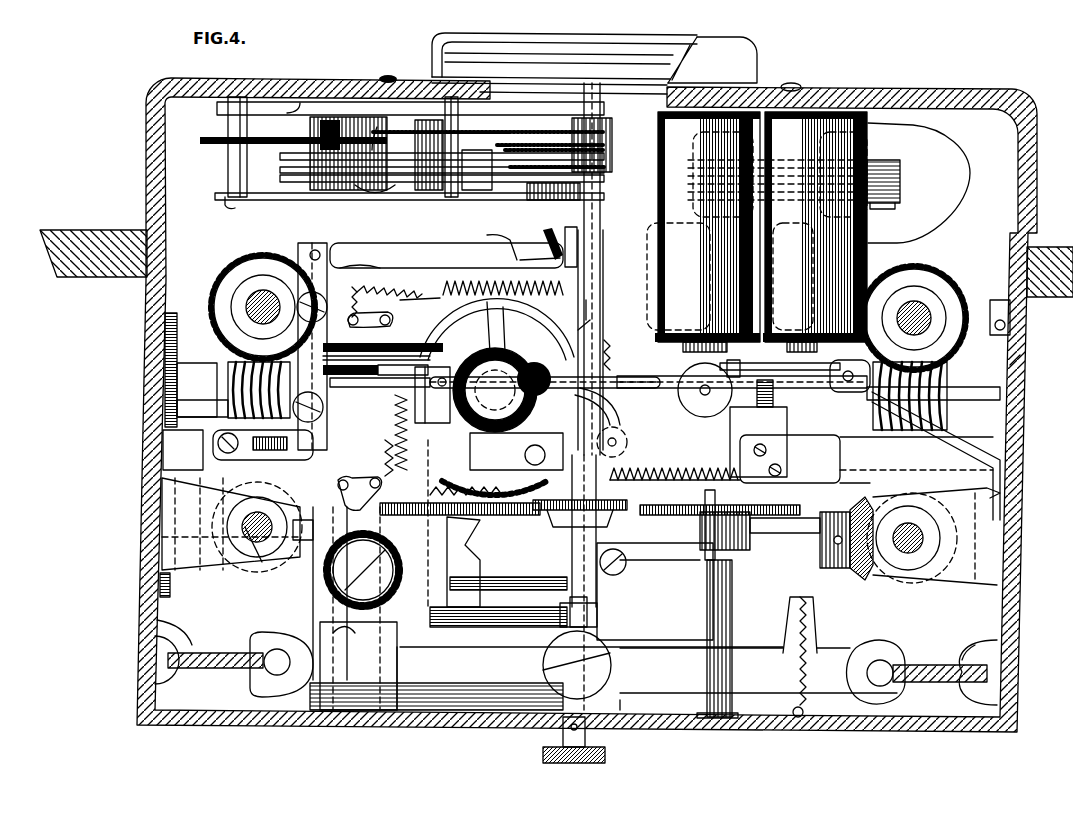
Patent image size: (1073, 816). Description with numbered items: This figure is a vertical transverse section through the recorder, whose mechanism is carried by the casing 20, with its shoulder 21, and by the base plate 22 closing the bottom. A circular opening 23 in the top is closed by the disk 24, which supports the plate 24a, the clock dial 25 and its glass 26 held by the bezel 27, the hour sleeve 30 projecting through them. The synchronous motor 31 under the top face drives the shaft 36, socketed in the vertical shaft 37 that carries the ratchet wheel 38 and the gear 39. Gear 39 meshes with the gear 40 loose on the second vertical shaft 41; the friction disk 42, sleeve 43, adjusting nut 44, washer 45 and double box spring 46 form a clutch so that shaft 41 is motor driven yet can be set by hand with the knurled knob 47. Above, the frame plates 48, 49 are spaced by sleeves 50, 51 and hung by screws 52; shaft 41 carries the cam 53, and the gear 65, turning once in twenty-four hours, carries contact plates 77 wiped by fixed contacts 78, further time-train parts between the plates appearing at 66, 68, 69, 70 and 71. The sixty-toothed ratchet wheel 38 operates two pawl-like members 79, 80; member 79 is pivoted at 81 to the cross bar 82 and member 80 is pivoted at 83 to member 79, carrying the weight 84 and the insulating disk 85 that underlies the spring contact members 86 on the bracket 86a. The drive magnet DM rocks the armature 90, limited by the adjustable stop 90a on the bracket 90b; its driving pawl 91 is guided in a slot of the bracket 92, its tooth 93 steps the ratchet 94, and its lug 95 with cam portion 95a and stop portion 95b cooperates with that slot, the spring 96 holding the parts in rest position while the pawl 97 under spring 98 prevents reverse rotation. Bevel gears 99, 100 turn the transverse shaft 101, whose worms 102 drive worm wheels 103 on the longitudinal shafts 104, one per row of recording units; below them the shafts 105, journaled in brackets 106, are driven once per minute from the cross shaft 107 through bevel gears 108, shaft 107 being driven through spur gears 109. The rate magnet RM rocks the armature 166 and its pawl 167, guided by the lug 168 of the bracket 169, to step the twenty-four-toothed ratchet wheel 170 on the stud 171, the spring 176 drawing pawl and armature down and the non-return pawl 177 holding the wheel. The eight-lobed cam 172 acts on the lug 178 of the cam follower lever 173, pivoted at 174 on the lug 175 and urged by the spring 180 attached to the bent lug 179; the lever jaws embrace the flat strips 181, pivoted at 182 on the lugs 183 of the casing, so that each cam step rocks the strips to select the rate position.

The casing 20 is at (157, 307).
The shoulder 21 is at (140, 228).
The base plate 22 is at (355, 705).
The circular opening 23 is at (430, 77).
The disk 24 is at (672, 74).
The plate 24a is at (513, 76).
The clock dial 25 is at (635, 62).
The glass 26 is at (578, 48).
The bezel 27 is at (757, 57).
The hour sleeve 30 is at (618, 83).
The electric motor 31 is at (965, 167).
The shaft 36 is at (737, 357).
The vertical shaft 37 is at (715, 560).
The ratchet wheel 38 is at (840, 482).
The gear 39 is at (700, 520).
The gear 40 is at (665, 520).
The second vertical shaft 41 is at (600, 300).
The friction disk 42 is at (700, 477).
The sleeve 43 is at (590, 585).
The adjusting nut 44 is at (600, 620).
The washer 45 is at (540, 515).
The double box spring 46 is at (560, 527).
The knurled knob 47 is at (605, 755).
The lower frame plate 48 is at (265, 200).
The frame plate 49 is at (287, 113).
The sleeve 50 is at (230, 175).
The sleeve 51 is at (217, 103).
The screws 52 is at (232, 203).
The cam 53 is at (547, 185).
The gear 65 is at (377, 127).
The gear 66 is at (340, 190).
The shaft 68 is at (297, 178).
The shaft 69 is at (300, 190).
The post 70 is at (470, 180).
The gear 71 is at (480, 187).
The contact plates 77 is at (417, 135).
The fixed contacts 78 is at (392, 147).
The member 79 is at (787, 452).
The member 80 is at (600, 400).
The pivot 81 is at (525, 457).
The cross bar 82 is at (183, 452).
The pivot 83 is at (616, 441).
The weight 84 is at (687, 367).
The disk 85 is at (540, 362).
The spring contact members 86 is at (452, 368).
The bracket 86a is at (370, 440).
The armature 90 is at (330, 632).
The adjustable stop 90a is at (300, 460).
The bracket 90b is at (245, 460).
The driving pawl 91 is at (402, 250).
The bracket 92 is at (600, 250).
The tooth 93 is at (450, 285).
The ratchet 94 is at (590, 320).
The lug 95 is at (487, 240).
The cam portion 95a is at (542, 273).
The stop portion 95b is at (550, 240).
The spring 96 is at (407, 275).
The pawl 97 is at (383, 312).
The spring 98 is at (352, 290).
The bevel gear 99 is at (497, 326).
The bevel gear 100 is at (325, 405).
The transverse shaft 101 is at (915, 440).
The worms 102 is at (222, 362).
The worm wheels 103 is at (950, 290).
The longitudinal shafts 104 is at (918, 312).
The shafts 105 is at (905, 570).
The brackets 106 is at (957, 575).
The cross shaft 107 is at (785, 528).
The bevel gears 108 is at (860, 578).
The spur gears 109 is at (175, 335).
The armature 166 is at (605, 360).
The pawl 167 is at (430, 495).
The lug 168 is at (425, 488).
The bracket 169 is at (390, 700).
The ratchet wheel 170 is at (445, 640).
The stud 171 is at (360, 640).
The multi-lobed cam 172 is at (322, 580).
The cam follower lever 173 is at (763, 670).
The pivot 174 is at (595, 652).
The lug 175 is at (650, 722).
The spring 176 is at (380, 480).
The non-return pawl 177 is at (335, 495).
The lug 178 is at (333, 633).
The bent over lug 179 is at (795, 597).
The spring 180 is at (807, 630).
The flat strips 181 is at (235, 668).
The pivot 182 is at (175, 705).
The lugs 183 is at (157, 623).
The rate magnet RM is at (866, 141).
The drive magnet DM is at (478, 700).